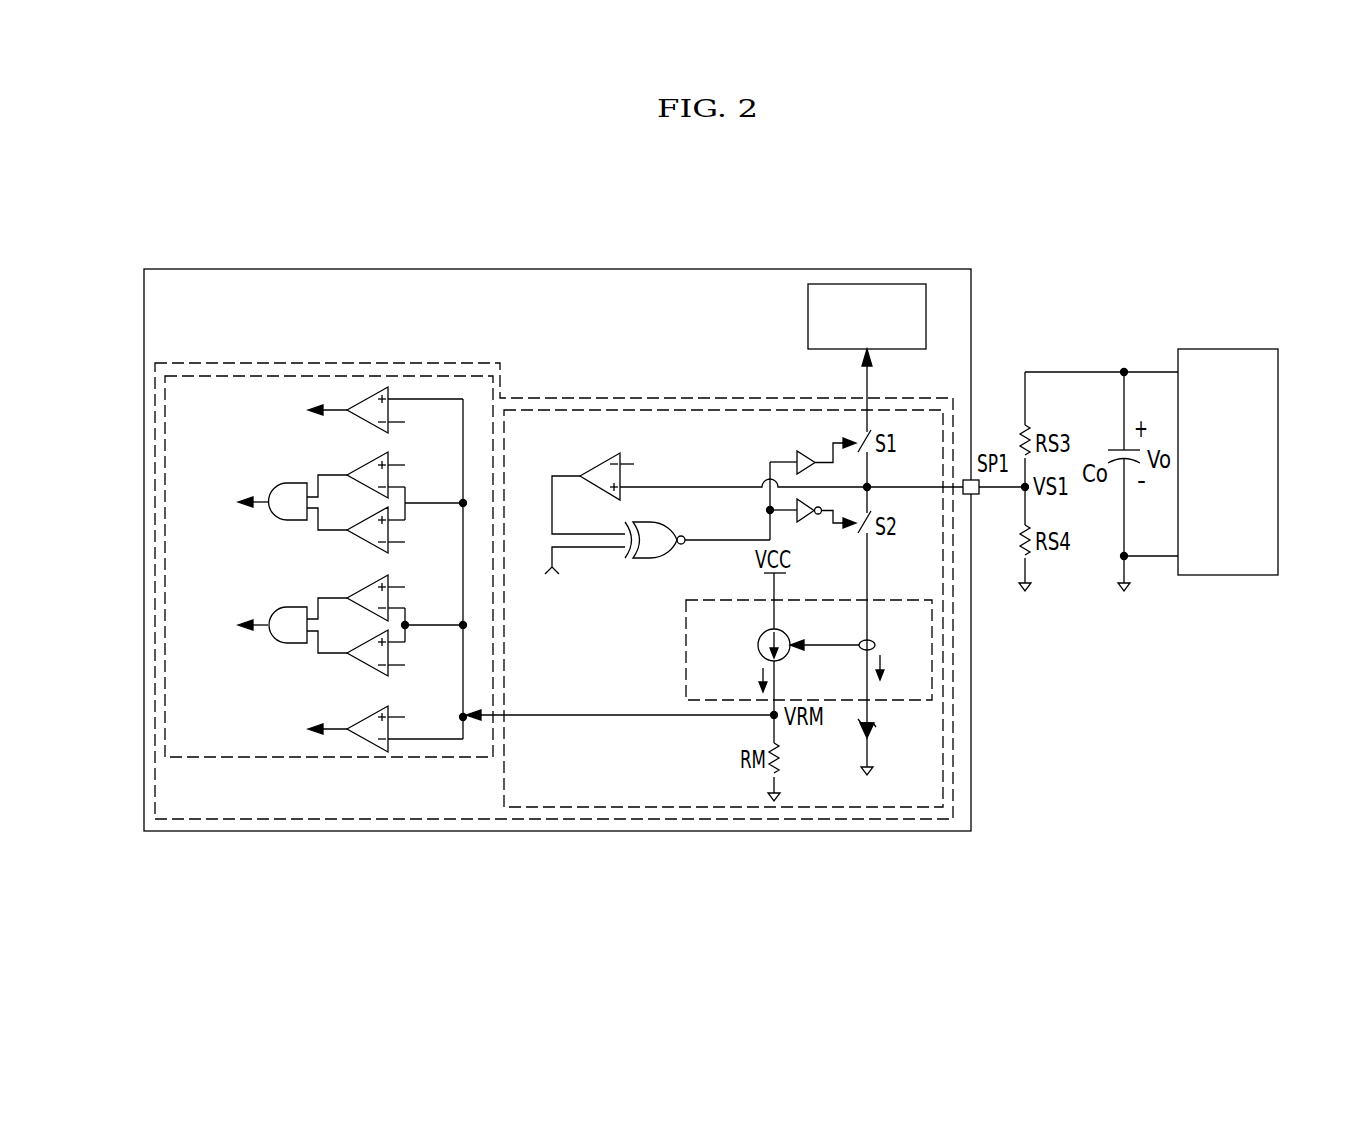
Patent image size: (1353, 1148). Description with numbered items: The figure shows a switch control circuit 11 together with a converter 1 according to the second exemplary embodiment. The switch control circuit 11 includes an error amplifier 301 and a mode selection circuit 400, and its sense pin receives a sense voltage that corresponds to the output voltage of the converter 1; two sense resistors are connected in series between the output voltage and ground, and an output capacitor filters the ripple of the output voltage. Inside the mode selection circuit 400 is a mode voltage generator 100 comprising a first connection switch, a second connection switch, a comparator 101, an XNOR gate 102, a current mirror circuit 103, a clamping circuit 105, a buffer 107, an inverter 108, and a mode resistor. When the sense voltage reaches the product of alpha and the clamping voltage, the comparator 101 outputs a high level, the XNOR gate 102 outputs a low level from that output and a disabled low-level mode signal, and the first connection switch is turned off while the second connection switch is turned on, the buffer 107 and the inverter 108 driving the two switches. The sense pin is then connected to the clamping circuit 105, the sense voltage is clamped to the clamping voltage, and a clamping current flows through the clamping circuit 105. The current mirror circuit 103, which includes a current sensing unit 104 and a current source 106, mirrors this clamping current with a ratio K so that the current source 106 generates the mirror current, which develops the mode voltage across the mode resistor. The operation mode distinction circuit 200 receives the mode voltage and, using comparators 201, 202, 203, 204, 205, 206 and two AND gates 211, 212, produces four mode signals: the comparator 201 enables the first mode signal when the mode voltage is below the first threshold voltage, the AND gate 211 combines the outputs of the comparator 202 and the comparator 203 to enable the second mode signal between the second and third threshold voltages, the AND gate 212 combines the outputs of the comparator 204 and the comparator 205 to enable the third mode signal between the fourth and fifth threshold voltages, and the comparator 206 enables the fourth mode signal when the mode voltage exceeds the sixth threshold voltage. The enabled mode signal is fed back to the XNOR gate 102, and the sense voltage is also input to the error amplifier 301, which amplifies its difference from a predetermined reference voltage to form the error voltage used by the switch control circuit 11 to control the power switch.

The converter 1 is at (1236, 349).
The switch control circuit 11 is at (758, 269).
The mode voltage generator 100 is at (503, 779).
The comparator 101 is at (604, 456).
The XNOR gate 102 is at (664, 560).
The current mirror circuit 103 is at (686, 646).
The current sensing unit 104 is at (878, 646).
The clamping circuit 105 is at (872, 745).
The current source 106 is at (758, 645).
The buffer 107 is at (794, 452).
The inverter 108 is at (822, 522).
The operation mode distinction circuit 200 is at (330, 760).
The comparator 201 is at (364, 717).
The comparator 202 is at (358, 662).
The comparator 203 is at (358, 584).
The comparator 204 is at (362, 540).
The comparator 205 is at (360, 462).
The comparator 206 is at (360, 420).
The AND gate 211 is at (272, 640).
The AND gate 212 is at (272, 518).
The error amplifier 301 is at (808, 314).
The mode selection circuit 400 is at (675, 398).